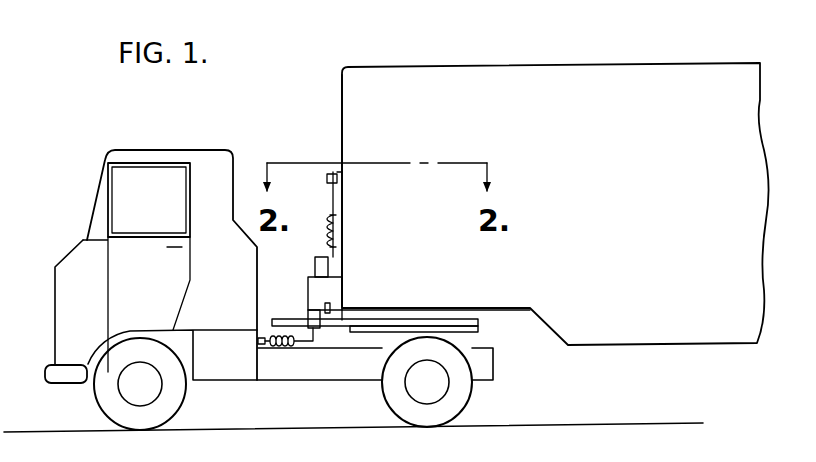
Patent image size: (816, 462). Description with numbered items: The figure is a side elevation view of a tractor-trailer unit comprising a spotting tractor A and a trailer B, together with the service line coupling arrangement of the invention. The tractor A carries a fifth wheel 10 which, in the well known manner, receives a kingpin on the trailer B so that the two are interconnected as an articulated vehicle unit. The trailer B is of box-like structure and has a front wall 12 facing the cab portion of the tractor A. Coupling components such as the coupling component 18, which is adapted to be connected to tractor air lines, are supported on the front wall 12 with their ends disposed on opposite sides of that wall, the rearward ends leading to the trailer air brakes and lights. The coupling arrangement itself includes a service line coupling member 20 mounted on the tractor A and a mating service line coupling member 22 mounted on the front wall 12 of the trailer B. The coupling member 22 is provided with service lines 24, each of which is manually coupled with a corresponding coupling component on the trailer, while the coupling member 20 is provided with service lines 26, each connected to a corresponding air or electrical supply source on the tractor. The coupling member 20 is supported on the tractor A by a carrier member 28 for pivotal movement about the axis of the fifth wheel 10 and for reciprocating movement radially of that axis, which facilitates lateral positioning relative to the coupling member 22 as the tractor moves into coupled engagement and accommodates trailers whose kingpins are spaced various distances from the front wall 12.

The spotting tractor A is at (170, 146).
The trailer B is at (449, 63).
The fifth wheel 10 is at (422, 304).
The front wall 12 is at (338, 97).
The coupling component 18 is at (332, 172).
The service line coupling member 20 is at (318, 287).
The mating service line coupling member 22 is at (333, 292).
The service lines 24 is at (343, 231).
The service lines 26 is at (291, 349).
The carrier member 28 is at (343, 335).